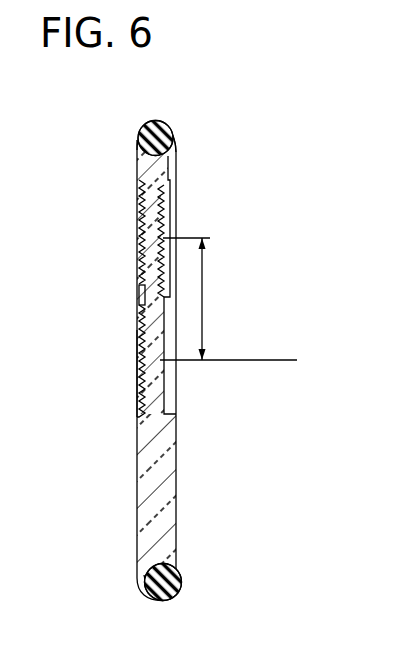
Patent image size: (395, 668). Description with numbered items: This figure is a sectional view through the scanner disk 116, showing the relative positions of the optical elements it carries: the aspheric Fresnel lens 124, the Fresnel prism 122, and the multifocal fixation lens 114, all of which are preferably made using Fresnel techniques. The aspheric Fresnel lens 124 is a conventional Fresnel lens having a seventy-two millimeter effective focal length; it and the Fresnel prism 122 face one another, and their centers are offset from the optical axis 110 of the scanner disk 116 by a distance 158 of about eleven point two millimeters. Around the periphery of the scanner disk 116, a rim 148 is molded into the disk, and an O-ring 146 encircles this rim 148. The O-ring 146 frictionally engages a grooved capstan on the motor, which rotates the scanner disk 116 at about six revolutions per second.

The optical axis 110 is at (243, 362).
The multifocal fixation lens 114 is at (138, 373).
The scanner disk 116 is at (168, 497).
The Fresnel prism 122 is at (137, 203).
The aspheric Fresnel lens 124 is at (165, 212).
The O-ring 146 is at (168, 124).
The rim 148 is at (141, 158).
The distance 158 is at (202, 318).